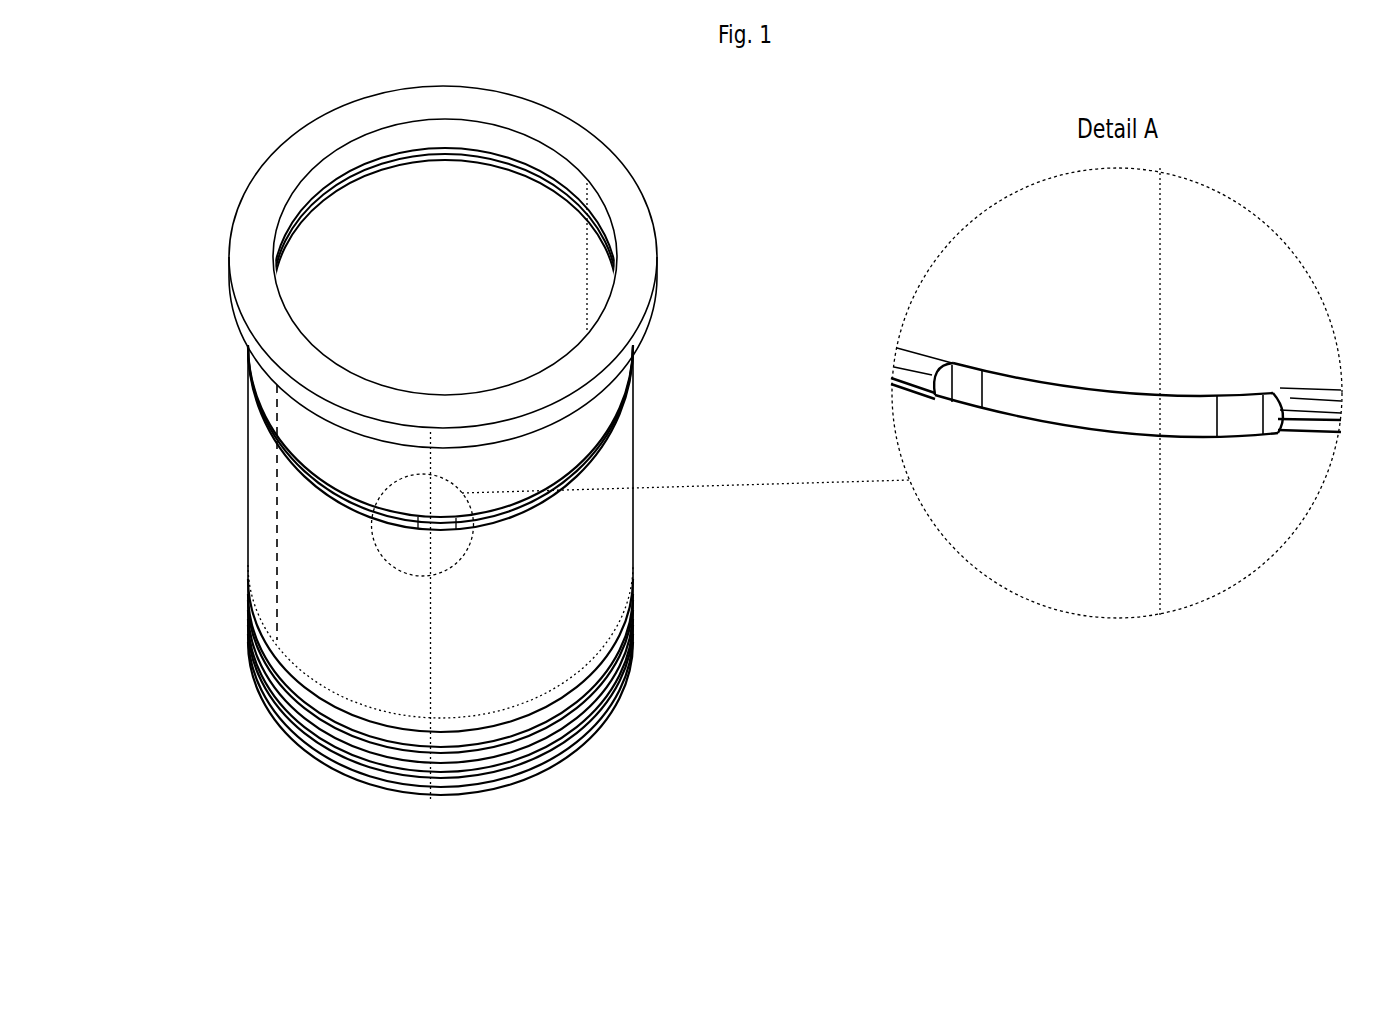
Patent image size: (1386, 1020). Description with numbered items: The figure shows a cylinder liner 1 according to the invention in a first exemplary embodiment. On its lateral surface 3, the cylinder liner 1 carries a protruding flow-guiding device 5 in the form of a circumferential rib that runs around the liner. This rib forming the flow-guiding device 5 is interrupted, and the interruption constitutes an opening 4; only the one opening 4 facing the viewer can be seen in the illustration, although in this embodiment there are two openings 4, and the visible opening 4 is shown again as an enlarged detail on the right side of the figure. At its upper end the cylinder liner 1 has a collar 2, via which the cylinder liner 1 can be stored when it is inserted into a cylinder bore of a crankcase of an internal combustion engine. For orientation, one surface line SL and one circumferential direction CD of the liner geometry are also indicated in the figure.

The cylinder liner 1 is at (517, 443).
The collar 2 is at (650, 243).
The lateral surface 3 is at (540, 552).
The opening 4 is at (1048, 423).
The flow-guiding device 5 is at (635, 418).
The surface line SL is at (277, 492).
The circumferential direction CD is at (243, 383).